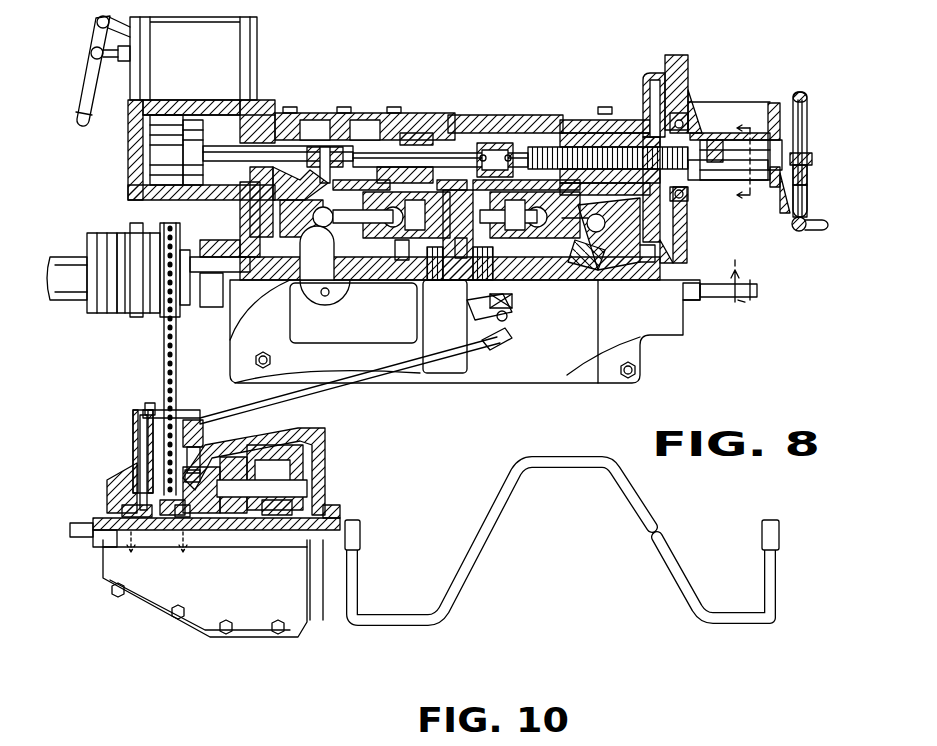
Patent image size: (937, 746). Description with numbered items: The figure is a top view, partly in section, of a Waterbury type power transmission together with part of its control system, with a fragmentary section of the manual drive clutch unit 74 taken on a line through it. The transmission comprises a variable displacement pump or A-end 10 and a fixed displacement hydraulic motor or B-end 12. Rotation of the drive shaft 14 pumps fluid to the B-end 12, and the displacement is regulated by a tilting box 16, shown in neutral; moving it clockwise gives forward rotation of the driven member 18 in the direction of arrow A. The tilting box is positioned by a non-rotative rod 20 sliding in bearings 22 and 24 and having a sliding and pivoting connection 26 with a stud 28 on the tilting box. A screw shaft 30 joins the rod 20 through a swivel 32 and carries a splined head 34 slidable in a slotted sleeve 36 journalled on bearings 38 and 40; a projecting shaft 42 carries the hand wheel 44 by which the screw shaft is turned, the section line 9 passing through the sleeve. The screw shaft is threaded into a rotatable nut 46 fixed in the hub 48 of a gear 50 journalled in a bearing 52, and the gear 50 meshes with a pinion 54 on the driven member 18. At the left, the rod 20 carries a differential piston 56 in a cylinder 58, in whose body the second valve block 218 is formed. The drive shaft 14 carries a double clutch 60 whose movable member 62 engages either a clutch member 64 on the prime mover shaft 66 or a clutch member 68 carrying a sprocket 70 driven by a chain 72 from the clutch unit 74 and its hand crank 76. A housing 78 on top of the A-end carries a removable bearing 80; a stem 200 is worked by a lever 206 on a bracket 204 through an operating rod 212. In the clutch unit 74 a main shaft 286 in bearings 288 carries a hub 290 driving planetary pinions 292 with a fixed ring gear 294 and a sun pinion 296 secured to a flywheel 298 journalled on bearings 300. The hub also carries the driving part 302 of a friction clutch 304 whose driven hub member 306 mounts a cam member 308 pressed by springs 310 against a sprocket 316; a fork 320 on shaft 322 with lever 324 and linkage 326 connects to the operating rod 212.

In FIG. 8, the second valve block 218 is at (248, 36).
In FIG. 8, the cylinder 58 is at (130, 136).
In FIG. 8, the differential piston 56 is at (185, 150).
In FIG. 8, the bearing 24 is at (266, 100).
In FIG. 8, the sliding and pivoting connection 26 is at (350, 113).
In FIG. 8, the stud 28 is at (323, 147).
In FIG. 8, the bearing 22 is at (410, 133).
In FIG. 8, the non-rotative rod 20 is at (470, 153).
In FIG. 8, the swivel 32 is at (500, 140).
In FIG. 8, the screw shaft 30 is at (545, 147).
In FIG. 8, the hub 48 is at (590, 120).
In FIG. 8, the rotatable nut 46 is at (604, 120).
In FIG. 8, the bearing 52 is at (648, 80).
In FIG. 8, the gear 50 is at (660, 75).
In FIG. 8, the bearing 38 is at (692, 108).
In FIG. 8, the splined head 34 is at (720, 140).
In FIG. 8, the slotted sleeve 36 is at (752, 140).
In FIG. 8, the section line 9 is at (743, 163).
In FIG. 8, the projecting shaft 42 is at (807, 157).
In FIG. 8, the bearing 40 is at (792, 212).
In FIG. 8, the hand wheel 44 is at (803, 229).
In FIG. 8, the tilting box 16 is at (315, 195).
In FIG. 8, the pinion 54 is at (680, 243).
In FIG. 8, the variable displacement pump (A-end) 10 is at (270, 322).
In FIG. 10, the variable displacement pump (A-end) 10 is at (152, 545).
In FIG. 8, the housing 78 is at (372, 325).
In FIG. 8, the removable bearing 80 is at (340, 296).
In FIG. 8, the fixed displacement hydraulic motor (B-end) 12 is at (620, 320).
In FIG. 8, the driven member 18 is at (718, 298).
In FIG. 8, the arrow A is at (744, 291).
In FIG. 8, the stem 200 is at (470, 312).
In FIG. 8, the bracket 204 is at (490, 330).
In FIG. 8, the lever 206 is at (514, 308).
In FIG. 8, the operating rod 212 is at (400, 368).
In FIG. 8, the shaft 66 is at (60, 300).
In FIG. 8, the clutch member 64 is at (95, 240).
In FIG. 8, the movable member 62 is at (127, 233).
In FIG. 8, the double clutch 60 is at (128, 310).
In FIG. 8, the sprocket 70 is at (170, 224).
In FIG. 8, the chain 72 is at (178, 362).
In FIG. 8, the clutch member 68 is at (180, 298).
In FIG. 8, the drive shaft 14 is at (197, 257).
In FIG. 10, the main shaft 286 is at (338, 520).
In FIG. 10, the bearings 288 is at (95, 515).
In FIG. 10, the flywheel 298 is at (312, 448).
In FIG. 10, the planetary pinions 292 is at (258, 460).
In FIG. 10, the fixed ring gear 294 is at (236, 470).
In FIG. 10, the hub 290 is at (220, 520).
In FIG. 10, the sun pinion 296 is at (247, 520).
In FIG. 10, the bearings 300 is at (272, 522).
In FIG. 10, the driving part 302 is at (225, 455).
In FIG. 10, the spring loaded friction clutch 304 is at (193, 520).
In FIG. 10, the hub member 306 is at (167, 530).
In FIG. 10, the cam member 308 is at (138, 530).
In FIG. 10, the sprocket 316 is at (180, 535).
In FIG. 10, the springs 310 is at (130, 500).
In FIG. 10, the fork 320 is at (140, 490).
In FIG. 10, the shaft 322 is at (140, 425).
In FIG. 10, the lever 324 is at (150, 403).
In FIG. 10, the linkage 326 is at (182, 412).
In FIG. 10, the manual drive clutch unit 74 is at (200, 625).
In FIG. 10, the hand crank 76 is at (468, 578).